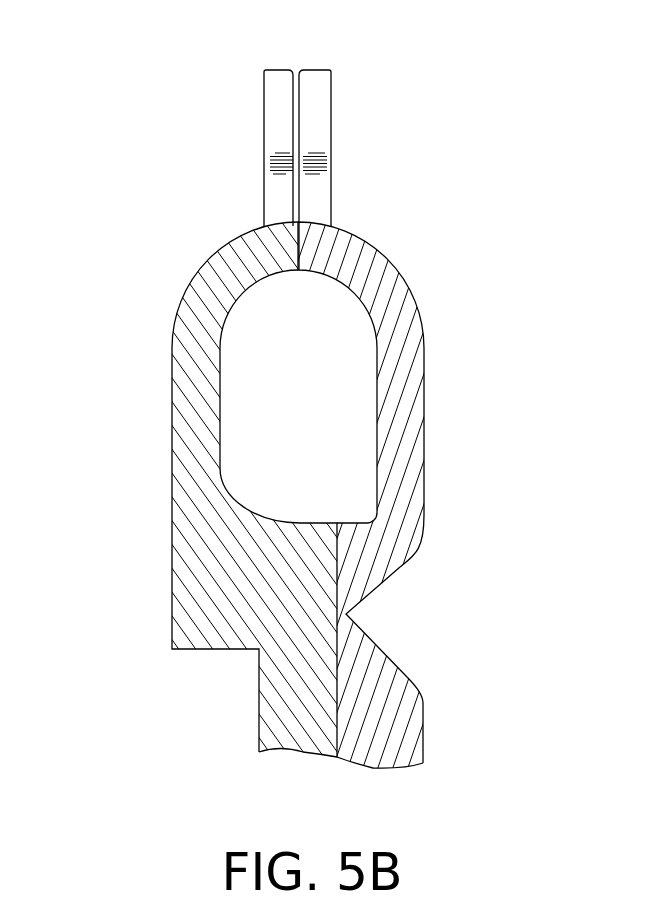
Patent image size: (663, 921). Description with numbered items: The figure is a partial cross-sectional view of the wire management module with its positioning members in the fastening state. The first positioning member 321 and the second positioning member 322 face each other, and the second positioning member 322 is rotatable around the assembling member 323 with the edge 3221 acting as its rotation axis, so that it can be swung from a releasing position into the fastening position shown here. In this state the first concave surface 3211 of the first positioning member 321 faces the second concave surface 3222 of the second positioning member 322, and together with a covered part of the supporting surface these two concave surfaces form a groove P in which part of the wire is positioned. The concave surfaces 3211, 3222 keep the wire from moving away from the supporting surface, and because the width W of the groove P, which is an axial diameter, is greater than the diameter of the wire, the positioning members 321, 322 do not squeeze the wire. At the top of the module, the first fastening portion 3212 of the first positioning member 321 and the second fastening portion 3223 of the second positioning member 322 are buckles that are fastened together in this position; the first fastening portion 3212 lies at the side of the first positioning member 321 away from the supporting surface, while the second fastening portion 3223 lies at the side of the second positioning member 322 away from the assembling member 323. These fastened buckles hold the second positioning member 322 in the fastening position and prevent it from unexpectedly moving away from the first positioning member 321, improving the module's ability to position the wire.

The first positioning member 321 is at (195, 440).
The second positioning member 322 is at (412, 447).
The assembling member 323 is at (397, 732).
The edge 3221 is at (348, 617).
The second fastening portion 3223 is at (277, 80).
The first fastening portion 3212 is at (318, 80).
The first concave surface 3211 is at (232, 381).
The second concave surface 3222 is at (365, 381).
The groove P is at (328, 338).
The width W is at (375, 420).